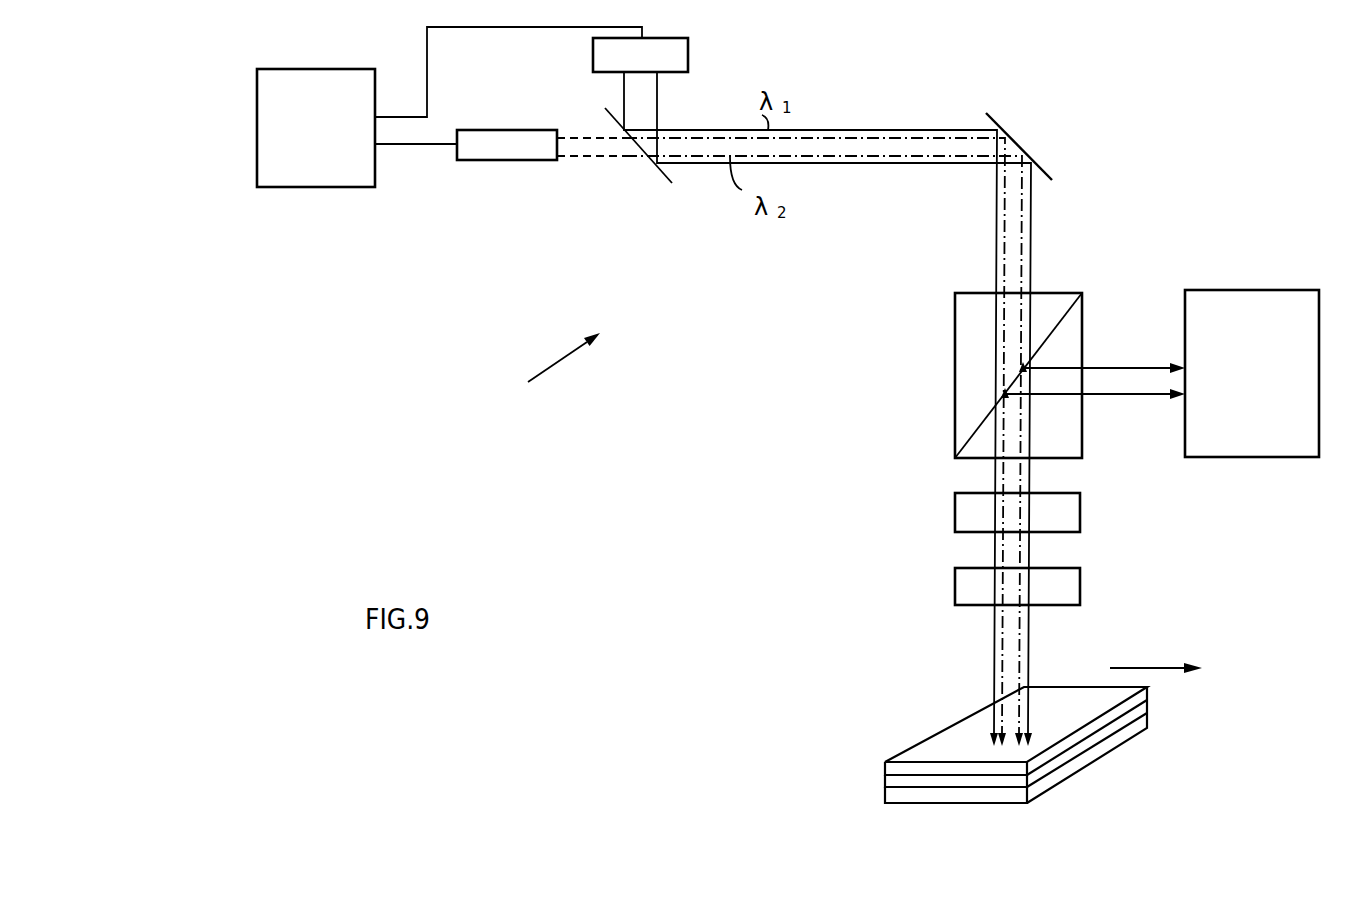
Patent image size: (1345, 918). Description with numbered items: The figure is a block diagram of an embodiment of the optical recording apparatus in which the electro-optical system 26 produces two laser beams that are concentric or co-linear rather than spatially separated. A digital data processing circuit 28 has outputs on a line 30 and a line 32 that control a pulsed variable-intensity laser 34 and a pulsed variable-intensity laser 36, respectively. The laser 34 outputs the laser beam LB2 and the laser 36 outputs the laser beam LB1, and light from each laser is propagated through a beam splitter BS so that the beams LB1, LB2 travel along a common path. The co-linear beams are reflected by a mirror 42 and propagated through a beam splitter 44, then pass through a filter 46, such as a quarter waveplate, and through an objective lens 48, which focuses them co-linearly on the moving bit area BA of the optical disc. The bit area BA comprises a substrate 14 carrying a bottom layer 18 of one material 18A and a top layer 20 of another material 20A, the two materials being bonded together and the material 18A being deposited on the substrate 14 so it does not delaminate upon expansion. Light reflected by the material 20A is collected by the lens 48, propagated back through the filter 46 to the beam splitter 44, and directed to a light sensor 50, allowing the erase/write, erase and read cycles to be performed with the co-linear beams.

The digital data processing circuit 28 is at (260, 78).
The line 32 is at (427, 53).
The line 30 is at (417, 145).
The pulsed variable-intensity laser 34 is at (518, 160).
The pulsed variable-intensity laser 36 is at (688, 50).
The beam splitter BS is at (660, 170).
The laser beam LB1 is at (882, 128).
The laser beam LB2 is at (815, 157).
The mirror 42 is at (988, 120).
The beam splitter 44 is at (955, 388).
The light sensor 50 is at (1279, 288).
The filter 46 is at (955, 510).
The objective lens 48 is at (955, 590).
The electro-optical system 26 is at (546, 368).
The bit area BA is at (880, 685).
The top layer 20 is at (925, 750).
The bottom layer 18 is at (890, 778).
The substrate 14 is at (890, 797).
The material 20A is at (1013, 765).
The material 18A is at (1010, 780).